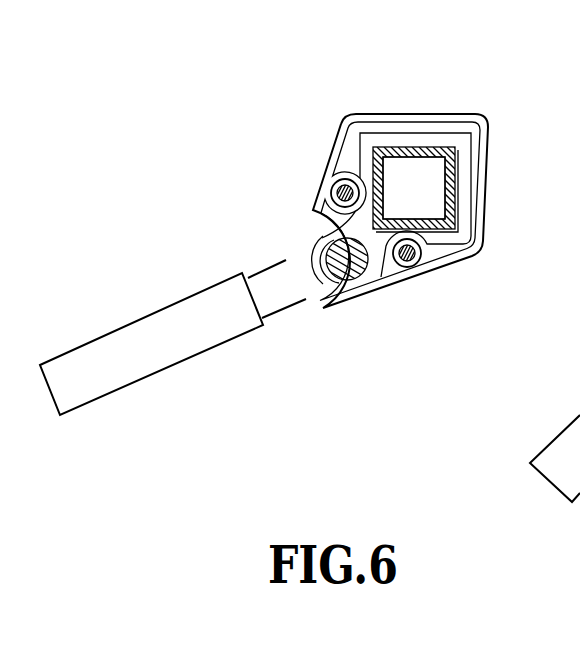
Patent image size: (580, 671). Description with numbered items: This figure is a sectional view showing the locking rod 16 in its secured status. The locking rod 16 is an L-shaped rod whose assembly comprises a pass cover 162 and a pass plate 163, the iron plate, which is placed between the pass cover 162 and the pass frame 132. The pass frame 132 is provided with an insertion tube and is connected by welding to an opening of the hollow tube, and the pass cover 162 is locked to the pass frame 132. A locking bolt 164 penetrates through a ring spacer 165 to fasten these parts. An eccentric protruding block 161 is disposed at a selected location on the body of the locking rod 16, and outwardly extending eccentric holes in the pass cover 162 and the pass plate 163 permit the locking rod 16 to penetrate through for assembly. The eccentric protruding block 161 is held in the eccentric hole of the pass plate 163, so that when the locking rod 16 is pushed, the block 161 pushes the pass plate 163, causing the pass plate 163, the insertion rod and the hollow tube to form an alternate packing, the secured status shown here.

The locking rod 16 is at (173, 328).
The pass frame 132 is at (473, 164).
The eccentric protruding block 161 is at (347, 308).
The pass cover 162 is at (400, 175).
The pass plate 163 is at (423, 137).
The locking bolt 164 is at (327, 242).
The ring spacer 165 is at (353, 255).